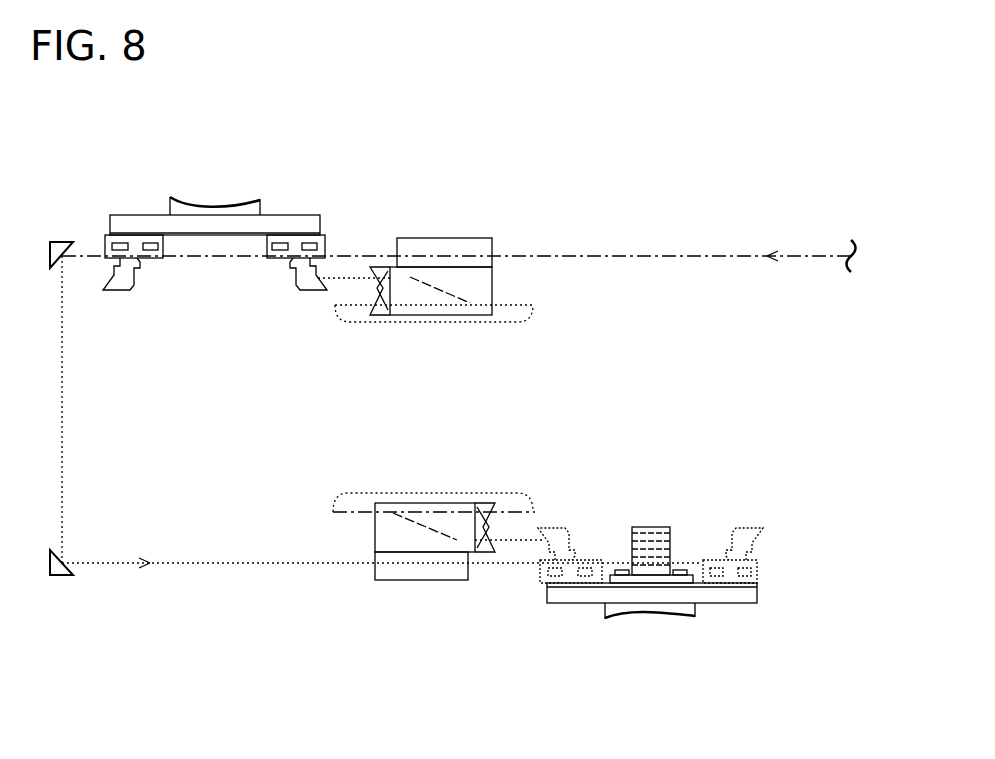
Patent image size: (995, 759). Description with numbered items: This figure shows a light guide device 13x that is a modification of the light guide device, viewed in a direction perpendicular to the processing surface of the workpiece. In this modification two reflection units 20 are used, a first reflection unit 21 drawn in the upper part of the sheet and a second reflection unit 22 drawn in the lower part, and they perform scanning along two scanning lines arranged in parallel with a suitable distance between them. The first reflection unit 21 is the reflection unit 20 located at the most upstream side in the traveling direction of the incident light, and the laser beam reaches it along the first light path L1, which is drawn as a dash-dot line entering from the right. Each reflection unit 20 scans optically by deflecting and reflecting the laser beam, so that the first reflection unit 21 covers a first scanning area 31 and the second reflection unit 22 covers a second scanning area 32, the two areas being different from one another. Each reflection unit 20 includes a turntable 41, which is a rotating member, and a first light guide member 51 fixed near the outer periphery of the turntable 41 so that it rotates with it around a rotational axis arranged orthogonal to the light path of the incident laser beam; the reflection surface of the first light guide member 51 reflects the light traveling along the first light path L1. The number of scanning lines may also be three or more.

The light guide device 13x is at (773, 163).
The first light path L1 is at (680, 258).
The reflection unit 20 is at (436, 411).
The first reflection unit 21 is at (395, 196).
The second reflection unit 22 is at (470, 627).
The first scanning area 31 is at (433, 316).
The second scanning area 32 is at (440, 501).
The turntable 41 is at (277, 222).
The first light guide member 51 is at (300, 302).